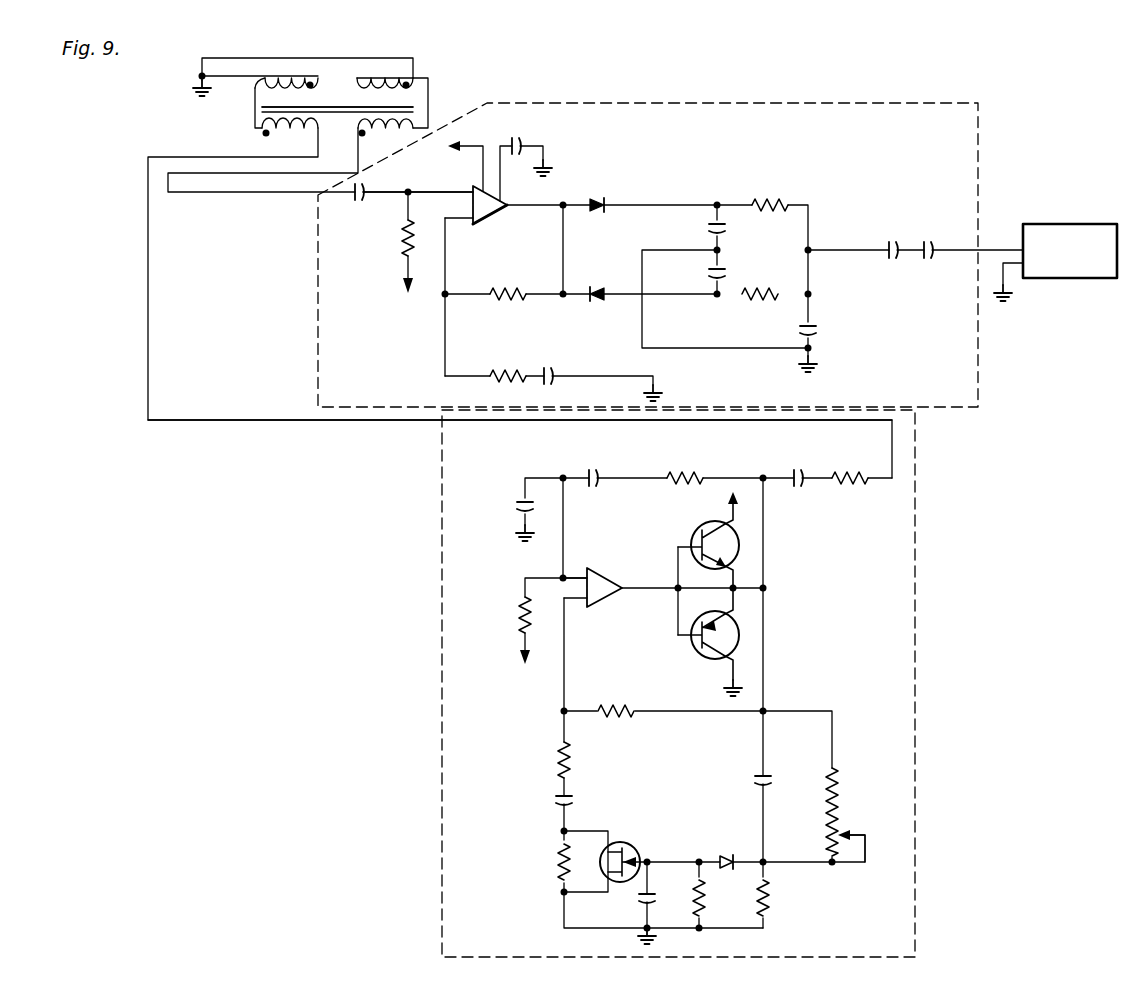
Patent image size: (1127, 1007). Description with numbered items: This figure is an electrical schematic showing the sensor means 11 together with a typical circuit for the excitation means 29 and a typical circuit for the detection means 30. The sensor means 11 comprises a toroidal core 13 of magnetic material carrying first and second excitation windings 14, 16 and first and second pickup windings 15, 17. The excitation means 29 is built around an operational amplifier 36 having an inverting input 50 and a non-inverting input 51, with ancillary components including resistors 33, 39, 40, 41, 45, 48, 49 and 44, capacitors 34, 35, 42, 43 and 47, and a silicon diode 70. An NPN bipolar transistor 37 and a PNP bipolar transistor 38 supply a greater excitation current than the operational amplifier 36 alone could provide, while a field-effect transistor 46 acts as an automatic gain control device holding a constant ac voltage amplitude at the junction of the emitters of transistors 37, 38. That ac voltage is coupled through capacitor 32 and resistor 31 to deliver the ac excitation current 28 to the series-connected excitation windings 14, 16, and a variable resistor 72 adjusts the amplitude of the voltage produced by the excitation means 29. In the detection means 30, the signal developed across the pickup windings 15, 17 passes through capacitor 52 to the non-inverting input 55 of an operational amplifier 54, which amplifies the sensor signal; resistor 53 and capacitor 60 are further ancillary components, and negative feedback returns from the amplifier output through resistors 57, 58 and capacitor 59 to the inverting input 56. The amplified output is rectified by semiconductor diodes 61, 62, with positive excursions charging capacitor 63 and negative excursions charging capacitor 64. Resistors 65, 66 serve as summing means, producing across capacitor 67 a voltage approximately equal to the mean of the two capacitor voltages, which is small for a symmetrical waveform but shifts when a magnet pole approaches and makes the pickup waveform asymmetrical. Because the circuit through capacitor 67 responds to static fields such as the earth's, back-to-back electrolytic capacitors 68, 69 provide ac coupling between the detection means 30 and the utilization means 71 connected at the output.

The sensor means 11 is at (458, 75).
The toroidal core 13 is at (355, 113).
The first excitation winding 14 is at (292, 128).
The first pickup winding 15 is at (366, 128).
The second excitation winding 16 is at (255, 88).
The second pickup winding 17 is at (366, 104).
The ac excitation current 28 is at (158, 435).
The excitation means 29 is at (858, 608).
The detection means 30 is at (940, 142).
The resistor 31 is at (852, 468).
The capacitor 32 is at (790, 470).
The resistor 33 is at (688, 467).
The capacitor 34 is at (583, 472).
The capacitor 35 is at (516, 508).
The operational amplifier 36 is at (607, 585).
The NPN bipolar transistor 37 is at (697, 534).
The PNP bipolar transistor 38 is at (699, 652).
The resistor 39 is at (518, 615).
The resistor 40 is at (617, 700).
The resistor 41 is at (570, 758).
The capacitor 42 is at (572, 800).
The capacitor 43 is at (771, 782).
The resistor 44 is at (838, 787).
The resistor 45 is at (557, 866).
The field-effect transistor 46 is at (624, 847).
The capacitor 47 is at (655, 896).
The resistor 48 is at (706, 896).
The resistor 49 is at (770, 896).
The inverting input 50 is at (586, 605).
The non-inverting input 51 is at (585, 571).
The capacitor 52 is at (362, 195).
The resistor 53 is at (403, 238).
The operational amplifier 54 is at (503, 208).
The non-inverting input 55 is at (472, 189).
The inverting input 56 is at (470, 223).
The resistor 57 is at (512, 283).
The resistor 58 is at (512, 364).
The capacitor 59 is at (552, 372).
The capacitor 60 is at (511, 140).
The semiconductor diode 61 is at (597, 202).
The semiconductor diode 62 is at (597, 290).
The capacitor 63 is at (722, 228).
The capacitor 64 is at (722, 272).
The resistor 65 is at (773, 194).
The resistor 66 is at (766, 298).
The capacitor 67 is at (814, 330).
The capacitor 68 is at (897, 246).
The capacitor 69 is at (924, 258).
The silicon diode 70 is at (718, 842).
The utilization means 71 is at (1082, 263).
The variable resistor 72 is at (854, 834).